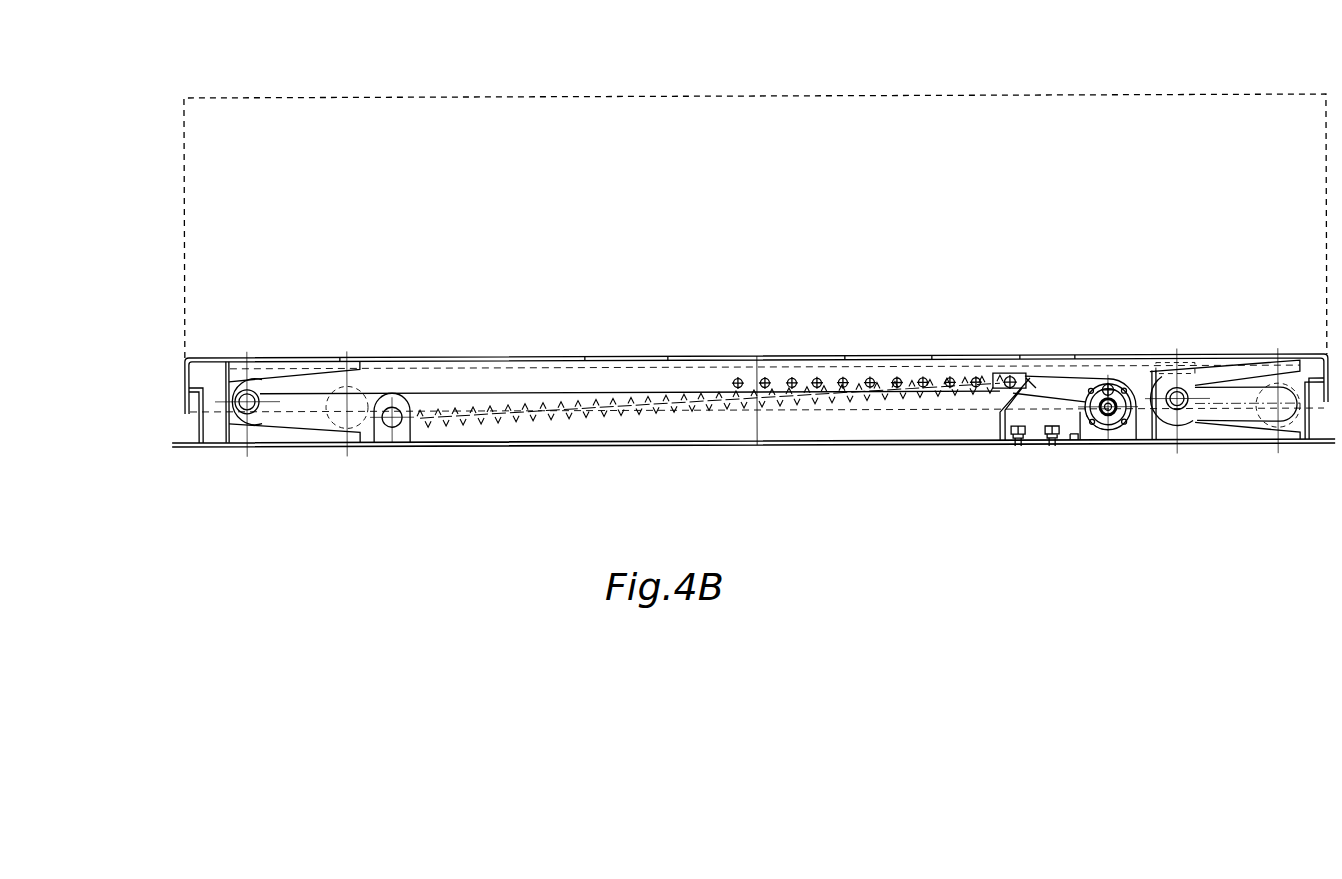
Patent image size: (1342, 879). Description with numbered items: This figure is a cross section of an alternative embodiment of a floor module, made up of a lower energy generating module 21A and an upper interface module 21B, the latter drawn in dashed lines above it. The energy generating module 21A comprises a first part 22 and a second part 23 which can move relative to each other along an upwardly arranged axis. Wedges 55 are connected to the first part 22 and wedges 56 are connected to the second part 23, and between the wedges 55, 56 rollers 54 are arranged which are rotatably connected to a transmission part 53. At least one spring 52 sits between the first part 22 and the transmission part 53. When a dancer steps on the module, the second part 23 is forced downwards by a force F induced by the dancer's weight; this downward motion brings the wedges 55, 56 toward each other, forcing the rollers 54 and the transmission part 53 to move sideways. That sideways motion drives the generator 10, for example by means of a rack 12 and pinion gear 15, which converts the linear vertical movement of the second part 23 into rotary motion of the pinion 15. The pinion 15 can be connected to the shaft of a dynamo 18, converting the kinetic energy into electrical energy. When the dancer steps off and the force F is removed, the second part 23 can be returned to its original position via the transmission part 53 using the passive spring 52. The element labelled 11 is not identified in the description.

The force F is at (734, 78).
The energy generating module 21A is at (144, 426).
The interface module 21B is at (166, 298).
The first part 22 is at (738, 445).
The second part 23 is at (607, 356).
The transmission part 53 is at (886, 357).
The spring 52 is at (465, 420).
The rollers 54 is at (240, 441).
The wedges 55 is at (284, 441).
The wedges 56 is at (266, 372).
The lever 11 is at (1018, 373).
The rack 12 is at (1070, 373).
The generator 10 is at (1046, 466).
The pinion gear 15 is at (1108, 415).
The dynamo 18 is at (1132, 441).